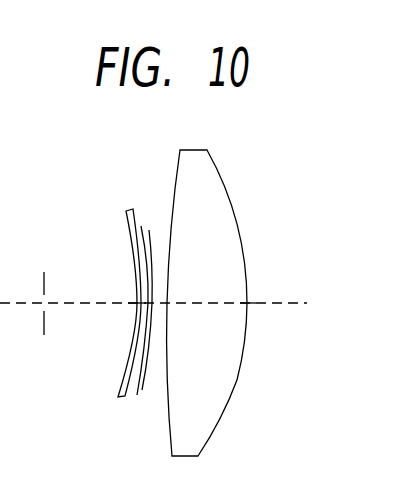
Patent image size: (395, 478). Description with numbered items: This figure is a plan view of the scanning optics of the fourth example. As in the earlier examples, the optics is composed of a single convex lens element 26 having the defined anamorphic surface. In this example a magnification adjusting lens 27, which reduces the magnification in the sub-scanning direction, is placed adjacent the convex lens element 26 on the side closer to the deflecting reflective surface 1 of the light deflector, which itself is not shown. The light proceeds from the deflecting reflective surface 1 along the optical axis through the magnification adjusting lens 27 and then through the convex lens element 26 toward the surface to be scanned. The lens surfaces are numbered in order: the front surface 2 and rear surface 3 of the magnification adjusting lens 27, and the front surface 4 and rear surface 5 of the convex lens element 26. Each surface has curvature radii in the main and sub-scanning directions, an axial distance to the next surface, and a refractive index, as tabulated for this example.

The deflecting reflective surface 1 is at (33, 304).
The front surface of magnification adjusting lens 2 is at (129, 318).
The rear surface of magnification adjusting lens 3 is at (146, 243).
The front surface of convex lens 4 is at (155, 320).
The rear surface of convex lens 5 is at (256, 319).
The convex lens element 26 is at (232, 254).
The magnification adjusting lens 27 is at (132, 209).